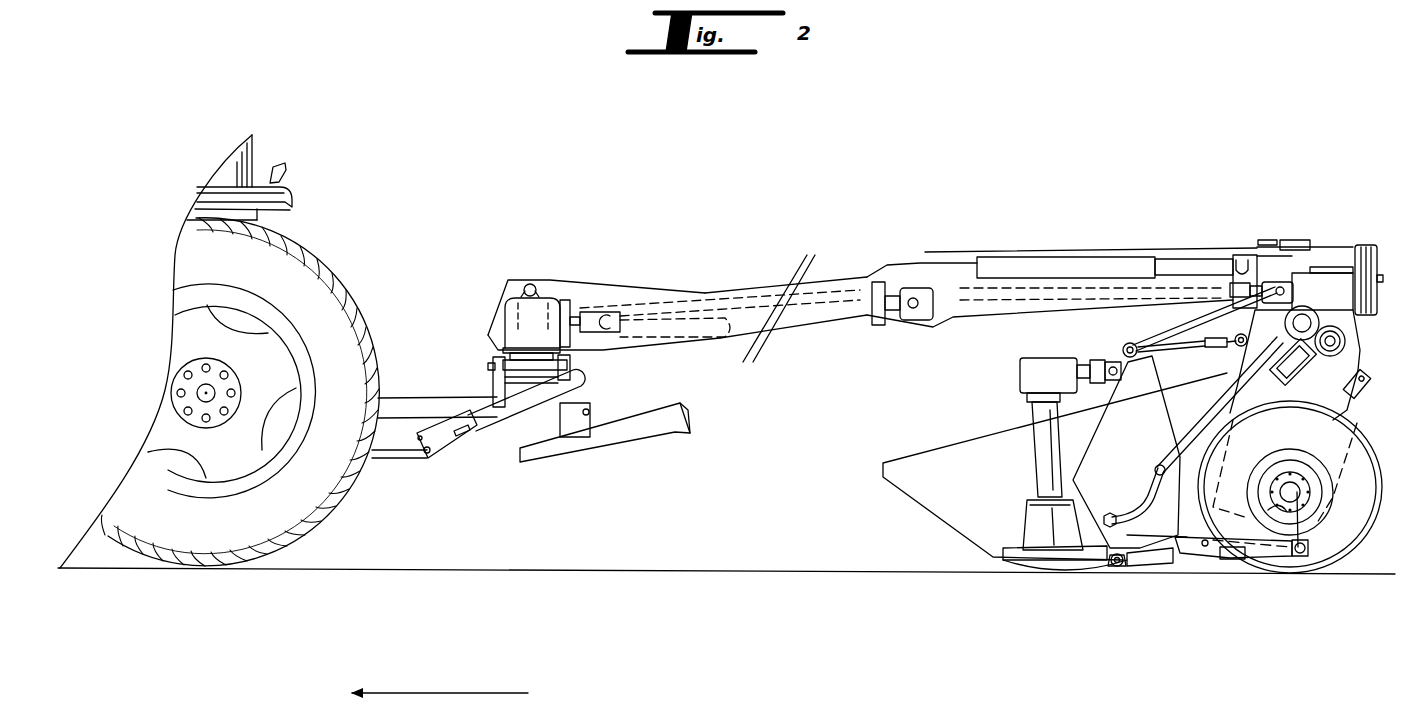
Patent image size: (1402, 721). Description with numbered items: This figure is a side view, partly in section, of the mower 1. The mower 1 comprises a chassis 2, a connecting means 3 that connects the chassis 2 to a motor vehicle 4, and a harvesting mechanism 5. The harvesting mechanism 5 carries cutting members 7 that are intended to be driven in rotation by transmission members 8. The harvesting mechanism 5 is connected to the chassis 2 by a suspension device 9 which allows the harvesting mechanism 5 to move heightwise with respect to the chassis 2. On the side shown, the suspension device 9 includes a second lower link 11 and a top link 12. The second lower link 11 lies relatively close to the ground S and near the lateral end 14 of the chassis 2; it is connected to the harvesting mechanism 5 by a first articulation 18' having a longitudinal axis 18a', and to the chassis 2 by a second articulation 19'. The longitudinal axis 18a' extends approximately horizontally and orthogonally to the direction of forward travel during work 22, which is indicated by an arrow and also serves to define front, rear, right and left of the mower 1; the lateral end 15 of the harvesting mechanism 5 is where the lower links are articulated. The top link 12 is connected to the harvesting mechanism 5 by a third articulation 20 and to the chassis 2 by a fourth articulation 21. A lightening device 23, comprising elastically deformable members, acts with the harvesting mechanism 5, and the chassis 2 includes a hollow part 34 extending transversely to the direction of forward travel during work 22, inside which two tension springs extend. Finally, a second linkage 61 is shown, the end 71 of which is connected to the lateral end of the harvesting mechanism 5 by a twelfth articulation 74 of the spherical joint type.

The mower 1 is at (737, 290).
The chassis 2 is at (1363, 346).
The connecting means 3 is at (468, 452).
The motor vehicle 4 is at (317, 253).
The harvesting mechanism 5 is at (903, 452).
The cutting members 7 is at (1017, 527).
The transmission members 8 is at (562, 296).
The suspension device 9 is at (1218, 573).
The second lower link 11 is at (1153, 562).
The top link 12 is at (1192, 338).
The lateral end of the chassis 14 is at (1354, 392).
The lateral end of the harvesting mechanism 15 is at (1025, 575).
The first articulation 18' is at (1092, 595).
The longitudinal axis 18a' is at (1116, 616).
The second articulation 19' is at (1321, 589).
The third articulation 20 is at (1127, 349).
The fourth articulation 21 is at (1232, 380).
The direction of forward travel during work 22 is at (425, 693).
The lightening device 23 is at (1304, 304).
The hollow part 34 is at (1337, 315).
The second linkage 61 is at (1190, 437).
The end of the second linkage 71 is at (1122, 503).
The twelfth articulation 74 is at (1112, 514).
The ground S is at (758, 569).